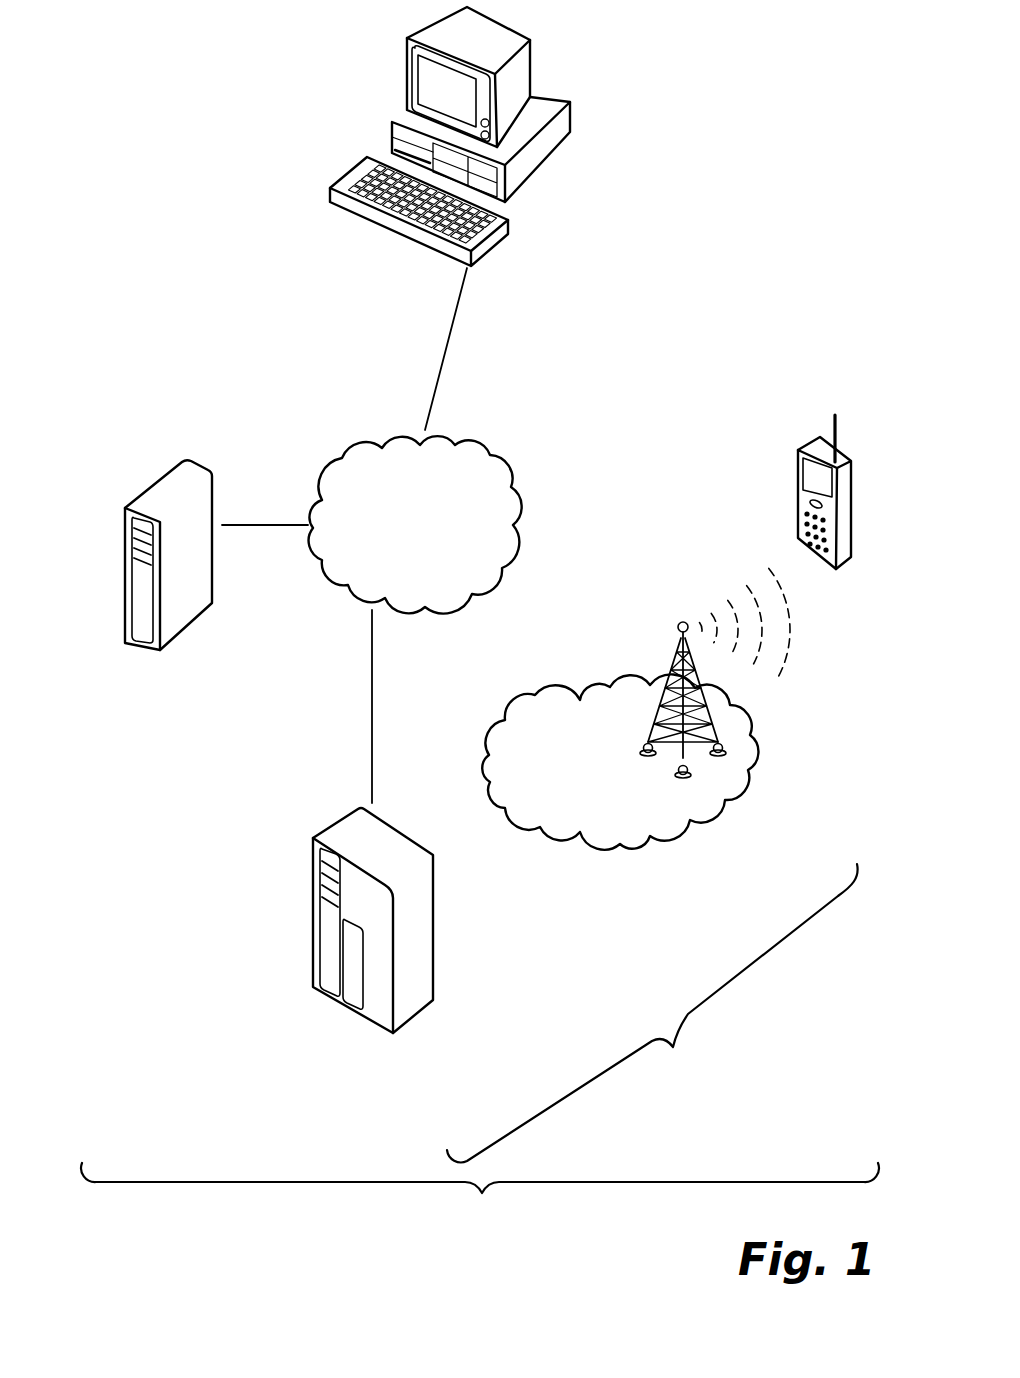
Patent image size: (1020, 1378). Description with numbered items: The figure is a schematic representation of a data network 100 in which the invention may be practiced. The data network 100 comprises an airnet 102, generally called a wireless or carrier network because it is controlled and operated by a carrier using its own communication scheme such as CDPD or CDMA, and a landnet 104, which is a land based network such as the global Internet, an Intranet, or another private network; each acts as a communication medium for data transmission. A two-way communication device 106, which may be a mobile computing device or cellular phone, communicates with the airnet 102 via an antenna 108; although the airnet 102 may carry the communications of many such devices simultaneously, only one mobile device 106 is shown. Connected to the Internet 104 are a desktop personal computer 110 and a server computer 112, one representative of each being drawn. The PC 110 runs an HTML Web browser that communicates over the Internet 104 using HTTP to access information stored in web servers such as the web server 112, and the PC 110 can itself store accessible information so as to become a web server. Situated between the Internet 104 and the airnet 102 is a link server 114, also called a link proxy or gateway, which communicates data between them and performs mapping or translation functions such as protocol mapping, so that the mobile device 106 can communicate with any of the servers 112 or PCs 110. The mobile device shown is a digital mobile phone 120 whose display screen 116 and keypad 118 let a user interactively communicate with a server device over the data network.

The data network 100 is at (480, 1197).
The airnet 102 is at (750, 775).
The landnet 104 is at (390, 447).
The two-way communication device 106 is at (762, 497).
The antenna 108 is at (675, 645).
The desktop personal computer 110 is at (543, 160).
The server computer 112 is at (157, 483).
The link server 114 is at (313, 932).
The display screen 116 is at (823, 488).
The keypad 118 is at (813, 555).
The digital mobile phone 120 is at (652, 1013).